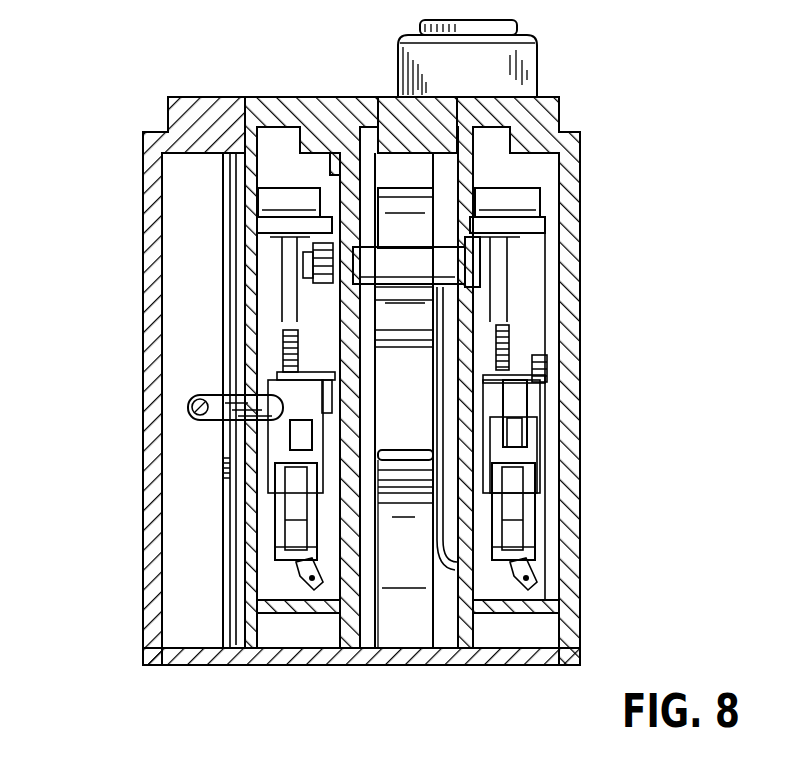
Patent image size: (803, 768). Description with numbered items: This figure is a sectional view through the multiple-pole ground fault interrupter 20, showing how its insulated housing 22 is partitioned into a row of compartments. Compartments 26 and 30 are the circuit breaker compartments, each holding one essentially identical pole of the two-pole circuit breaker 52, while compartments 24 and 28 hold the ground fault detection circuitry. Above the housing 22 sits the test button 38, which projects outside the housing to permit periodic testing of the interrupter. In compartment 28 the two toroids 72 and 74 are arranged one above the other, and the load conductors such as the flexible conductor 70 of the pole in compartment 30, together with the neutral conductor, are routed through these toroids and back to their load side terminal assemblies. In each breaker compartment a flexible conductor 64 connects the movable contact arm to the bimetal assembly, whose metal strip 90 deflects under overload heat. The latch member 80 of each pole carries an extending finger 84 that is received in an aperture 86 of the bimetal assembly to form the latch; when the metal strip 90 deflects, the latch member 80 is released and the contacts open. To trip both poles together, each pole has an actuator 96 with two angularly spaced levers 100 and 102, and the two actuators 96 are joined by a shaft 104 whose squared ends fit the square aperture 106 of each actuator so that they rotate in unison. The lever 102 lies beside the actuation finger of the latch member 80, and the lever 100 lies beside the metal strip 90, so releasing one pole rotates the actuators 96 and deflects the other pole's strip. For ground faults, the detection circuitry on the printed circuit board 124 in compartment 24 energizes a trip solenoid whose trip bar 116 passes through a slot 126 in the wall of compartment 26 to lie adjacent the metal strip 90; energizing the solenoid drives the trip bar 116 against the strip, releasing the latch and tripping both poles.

The ground fault interrupter 20 is at (600, 206).
The housing 22 is at (586, 134).
The compartment 24 is at (207, 636).
The compartment 26 is at (297, 635).
The compartment 28 is at (442, 640).
The compartment 30 is at (517, 630).
The test button 38 is at (517, 24).
The circuit breaker 52 is at (222, 82).
The flexible conductor 64 is at (310, 577).
The flexible conductor 70 is at (448, 517).
The toroid 72 is at (400, 207).
The toroid 74 is at (386, 632).
The latch member 80 is at (300, 372).
The extending finger 84 is at (515, 445).
The aperture 86 is at (530, 488).
The metal strip 90 is at (273, 478).
The actuator 96 is at (297, 297).
The lever 100 is at (538, 390).
The lever 102 is at (287, 338).
The shaft 104 is at (416, 260).
The square aperture 106 is at (320, 276).
The trip bar 116 is at (240, 421).
The printed circuit board 124 is at (220, 527).
The slot 126 is at (226, 462).